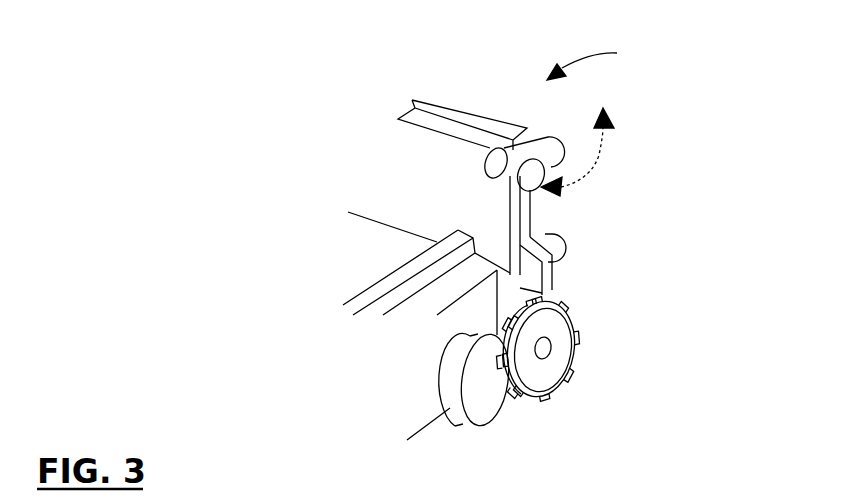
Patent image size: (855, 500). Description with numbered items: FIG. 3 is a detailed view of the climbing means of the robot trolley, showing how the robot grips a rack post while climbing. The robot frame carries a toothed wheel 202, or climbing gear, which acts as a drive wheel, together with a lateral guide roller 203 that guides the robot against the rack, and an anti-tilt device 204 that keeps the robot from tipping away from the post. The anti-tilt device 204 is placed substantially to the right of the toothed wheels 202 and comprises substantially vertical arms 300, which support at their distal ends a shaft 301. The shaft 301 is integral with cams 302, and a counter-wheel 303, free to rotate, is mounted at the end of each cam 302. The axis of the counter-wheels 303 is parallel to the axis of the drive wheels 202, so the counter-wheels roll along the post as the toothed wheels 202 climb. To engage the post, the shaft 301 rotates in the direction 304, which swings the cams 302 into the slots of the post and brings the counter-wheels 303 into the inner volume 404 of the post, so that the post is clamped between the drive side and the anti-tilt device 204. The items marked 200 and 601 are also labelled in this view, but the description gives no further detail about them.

The wheel 200 is at (477, 413).
The toothed wheel 202 is at (566, 336).
The lateral guide roller 203 is at (556, 251).
The anti-tilt device 204 is at (609, 60).
The substantially vertical arm 300 is at (530, 228).
The shaft 301 is at (447, 113).
The cam 302 is at (511, 183).
The counter-wheel 303 is at (484, 158).
The rotation of the shaft 304 is at (594, 166).
The inner volume 404 is at (247, 492).
The base 601 is at (344, 492).